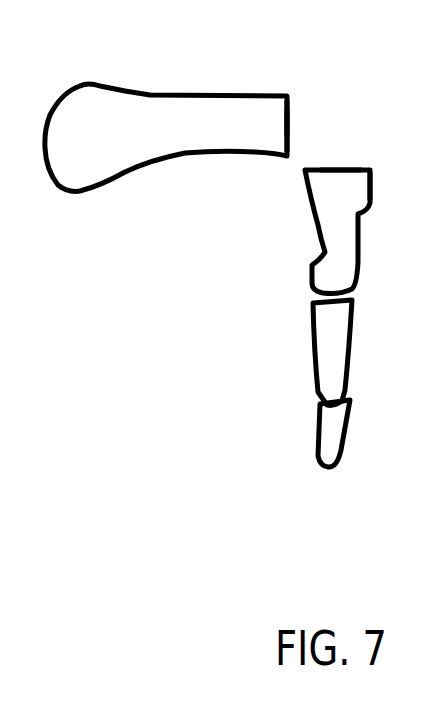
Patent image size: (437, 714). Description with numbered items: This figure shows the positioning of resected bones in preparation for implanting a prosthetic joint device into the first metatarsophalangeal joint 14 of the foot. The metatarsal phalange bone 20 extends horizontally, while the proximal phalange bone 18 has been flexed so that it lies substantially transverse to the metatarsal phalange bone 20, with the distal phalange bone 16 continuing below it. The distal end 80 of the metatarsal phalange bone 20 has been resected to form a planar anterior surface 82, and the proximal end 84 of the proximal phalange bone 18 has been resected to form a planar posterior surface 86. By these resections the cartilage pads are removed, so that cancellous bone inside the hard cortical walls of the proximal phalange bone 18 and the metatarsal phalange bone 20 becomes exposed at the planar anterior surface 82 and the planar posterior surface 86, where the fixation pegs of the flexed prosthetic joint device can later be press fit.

The first metatarsophalangeal joint 14 is at (290, 185).
The distal phalange bone 16 is at (337, 377).
The proximal phalange bone 18 is at (347, 250).
The metatarsal phalange bone 20 is at (168, 124).
The distal end 80 is at (284, 98).
The planar anterior surface 82 is at (290, 120).
The proximal end 84 is at (372, 177).
The planar posterior surface 86 is at (337, 170).